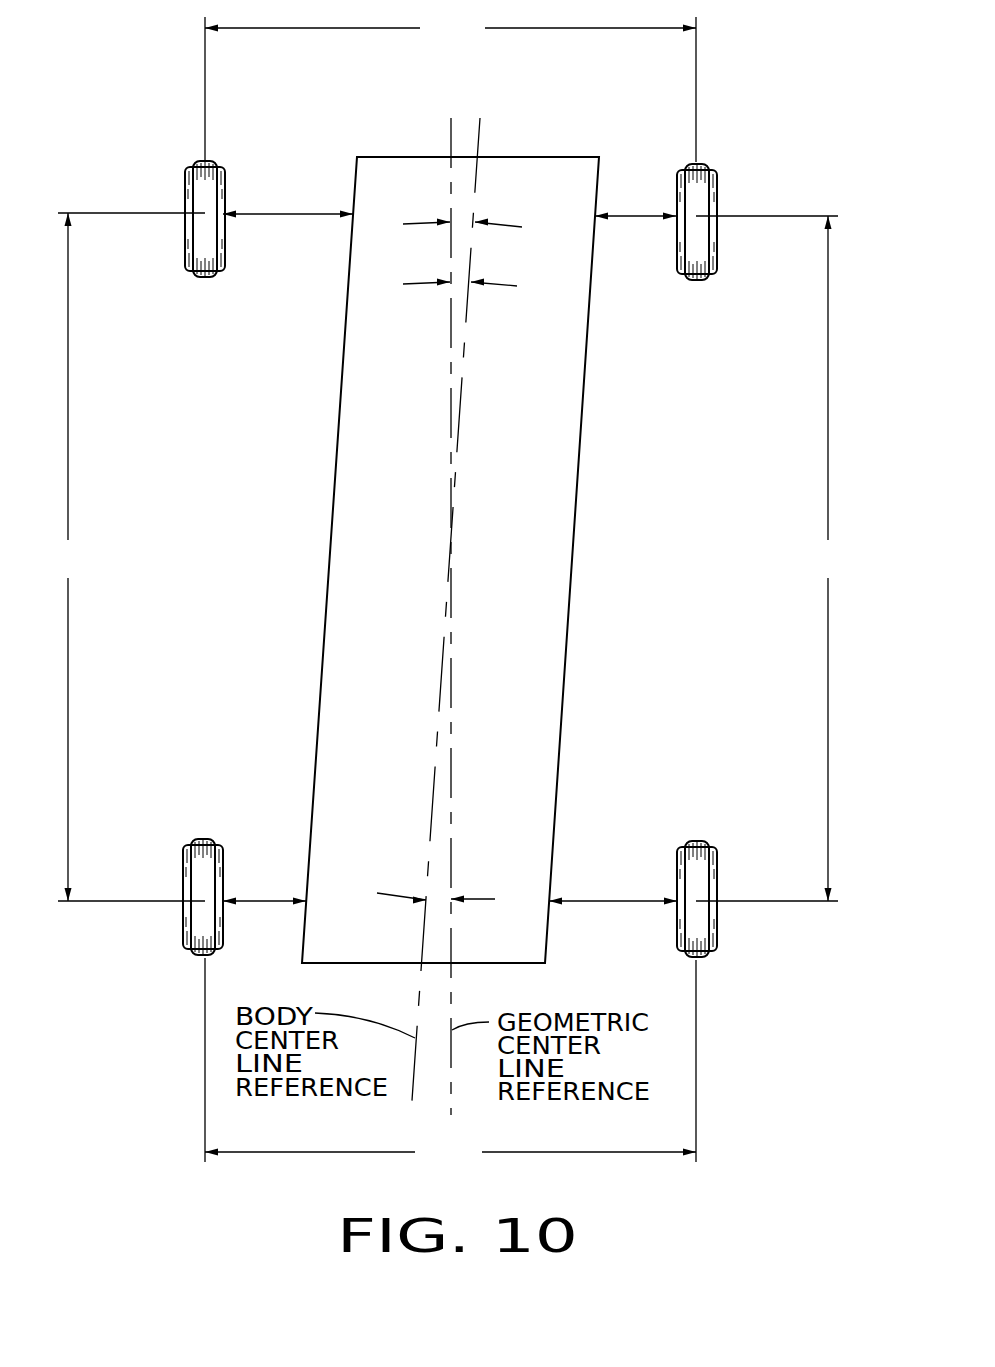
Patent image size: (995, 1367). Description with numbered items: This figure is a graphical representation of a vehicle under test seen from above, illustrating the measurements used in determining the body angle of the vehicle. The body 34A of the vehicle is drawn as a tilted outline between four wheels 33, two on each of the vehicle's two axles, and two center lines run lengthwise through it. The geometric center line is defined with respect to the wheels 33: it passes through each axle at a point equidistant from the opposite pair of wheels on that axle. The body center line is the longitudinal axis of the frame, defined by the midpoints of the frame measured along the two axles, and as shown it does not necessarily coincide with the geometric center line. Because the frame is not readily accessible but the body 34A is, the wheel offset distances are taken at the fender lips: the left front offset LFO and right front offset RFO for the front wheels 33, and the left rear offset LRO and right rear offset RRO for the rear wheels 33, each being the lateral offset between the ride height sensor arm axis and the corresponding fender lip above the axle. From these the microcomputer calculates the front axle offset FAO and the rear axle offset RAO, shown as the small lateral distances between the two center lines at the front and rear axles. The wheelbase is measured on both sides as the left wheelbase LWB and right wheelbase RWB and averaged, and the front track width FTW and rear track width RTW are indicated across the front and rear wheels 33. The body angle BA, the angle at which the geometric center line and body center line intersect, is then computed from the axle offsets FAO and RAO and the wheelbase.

The wheel/tire 33 is at (183, 190).
The body 34A is at (580, 473).
The front track width FTW is at (450, 89).
The rear track width RTW is at (450, 1061).
The left wheelbase LWB is at (123, 557).
The right wheelbase RWB is at (775, 558).
The left front offset LFO is at (300, 213).
The right front offset RFO is at (630, 215).
The left rear offset LRO is at (258, 900).
The right rear offset RRO is at (598, 902).
The front axle offset FAO is at (491, 231).
The body angle BA is at (483, 286).
The rear axle offset RAO is at (416, 883).